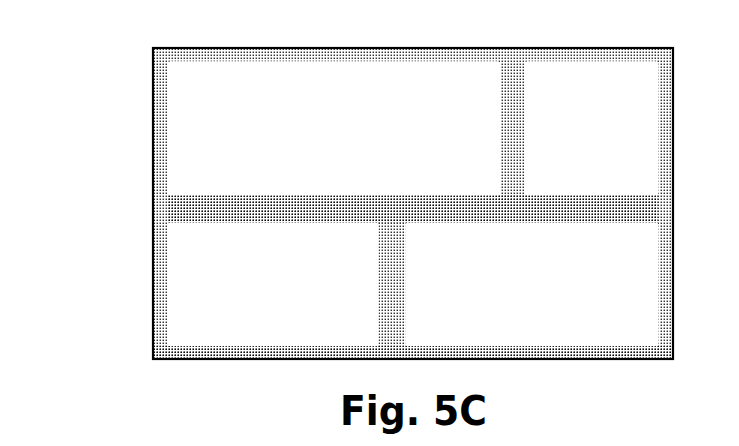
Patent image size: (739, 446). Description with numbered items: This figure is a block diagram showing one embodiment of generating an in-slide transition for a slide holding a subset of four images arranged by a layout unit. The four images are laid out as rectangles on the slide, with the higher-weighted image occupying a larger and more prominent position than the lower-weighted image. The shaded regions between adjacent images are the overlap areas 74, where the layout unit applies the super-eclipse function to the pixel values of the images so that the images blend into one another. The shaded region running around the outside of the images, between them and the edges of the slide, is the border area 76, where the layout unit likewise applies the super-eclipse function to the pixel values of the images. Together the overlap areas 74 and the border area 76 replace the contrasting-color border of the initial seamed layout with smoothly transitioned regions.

The overlap areas 74 is at (153, 211).
The border area 76 is at (152, 128).